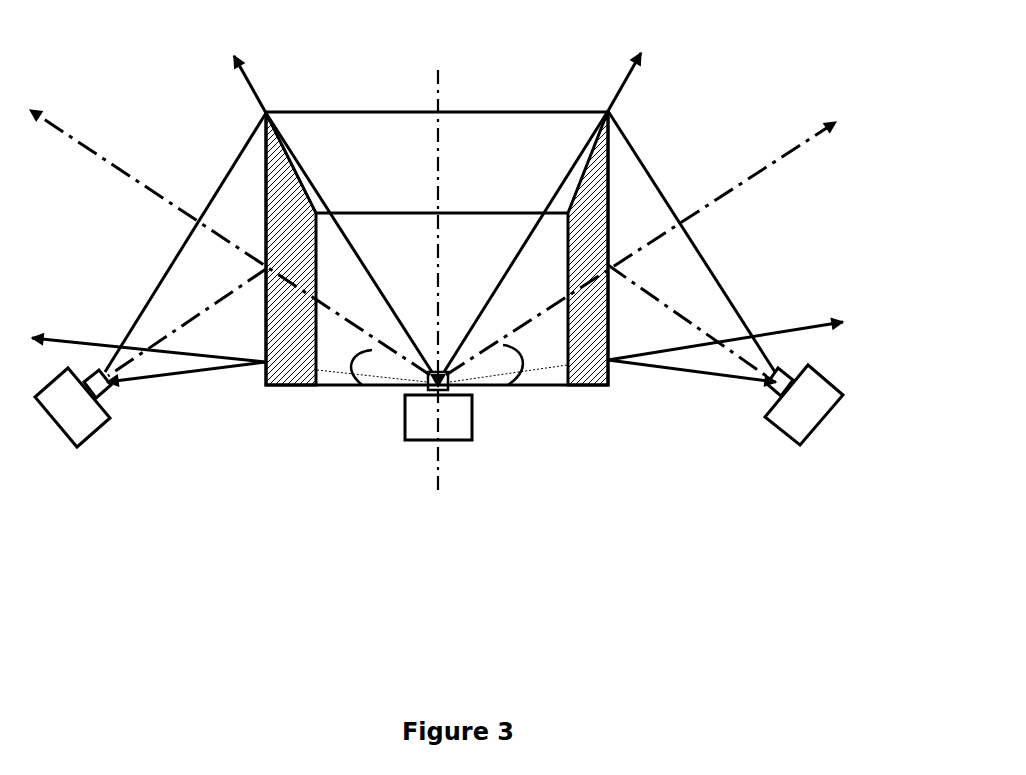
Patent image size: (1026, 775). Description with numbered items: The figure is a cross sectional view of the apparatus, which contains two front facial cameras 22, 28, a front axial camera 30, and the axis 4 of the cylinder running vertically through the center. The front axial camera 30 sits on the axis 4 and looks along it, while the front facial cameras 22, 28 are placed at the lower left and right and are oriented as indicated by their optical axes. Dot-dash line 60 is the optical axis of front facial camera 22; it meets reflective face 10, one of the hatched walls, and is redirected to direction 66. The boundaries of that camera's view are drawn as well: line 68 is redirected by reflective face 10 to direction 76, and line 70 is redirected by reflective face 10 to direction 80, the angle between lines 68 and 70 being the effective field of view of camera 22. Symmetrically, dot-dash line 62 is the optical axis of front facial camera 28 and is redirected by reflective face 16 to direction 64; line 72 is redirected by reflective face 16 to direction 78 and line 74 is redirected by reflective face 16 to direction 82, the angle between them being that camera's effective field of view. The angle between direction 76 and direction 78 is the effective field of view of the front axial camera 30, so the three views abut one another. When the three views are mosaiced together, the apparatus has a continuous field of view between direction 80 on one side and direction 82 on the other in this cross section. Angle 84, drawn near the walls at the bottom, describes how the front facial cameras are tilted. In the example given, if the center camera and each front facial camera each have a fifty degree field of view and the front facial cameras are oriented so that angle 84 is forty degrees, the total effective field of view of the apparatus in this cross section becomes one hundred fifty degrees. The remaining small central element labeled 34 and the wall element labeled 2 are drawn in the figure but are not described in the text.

The cell wall 2 is at (587, 345).
The axis of the cylinder 4 is at (438, 80).
The reflective face 10 is at (610, 327).
The reflective face 16 is at (264, 340).
The front facial camera 22 is at (805, 405).
The front facial camera 28 is at (73, 407).
The front axial camera 30 is at (438, 420).
The sample 34 is at (437, 388).
The optical axis of front facial camera 22 60 is at (690, 323).
The optical axis of front facial camera 28 62 is at (185, 327).
The direction 64 is at (70, 142).
The direction 66 is at (765, 168).
The line 68 is at (742, 322).
The line 70 is at (730, 377).
The line 72 is at (173, 258).
The line 74 is at (212, 368).
The direction 76 is at (640, 67).
The direction 78 is at (245, 65).
The direction 80 is at (672, 348).
The direction 82 is at (190, 352).
The angle 84 is at (372, 350).